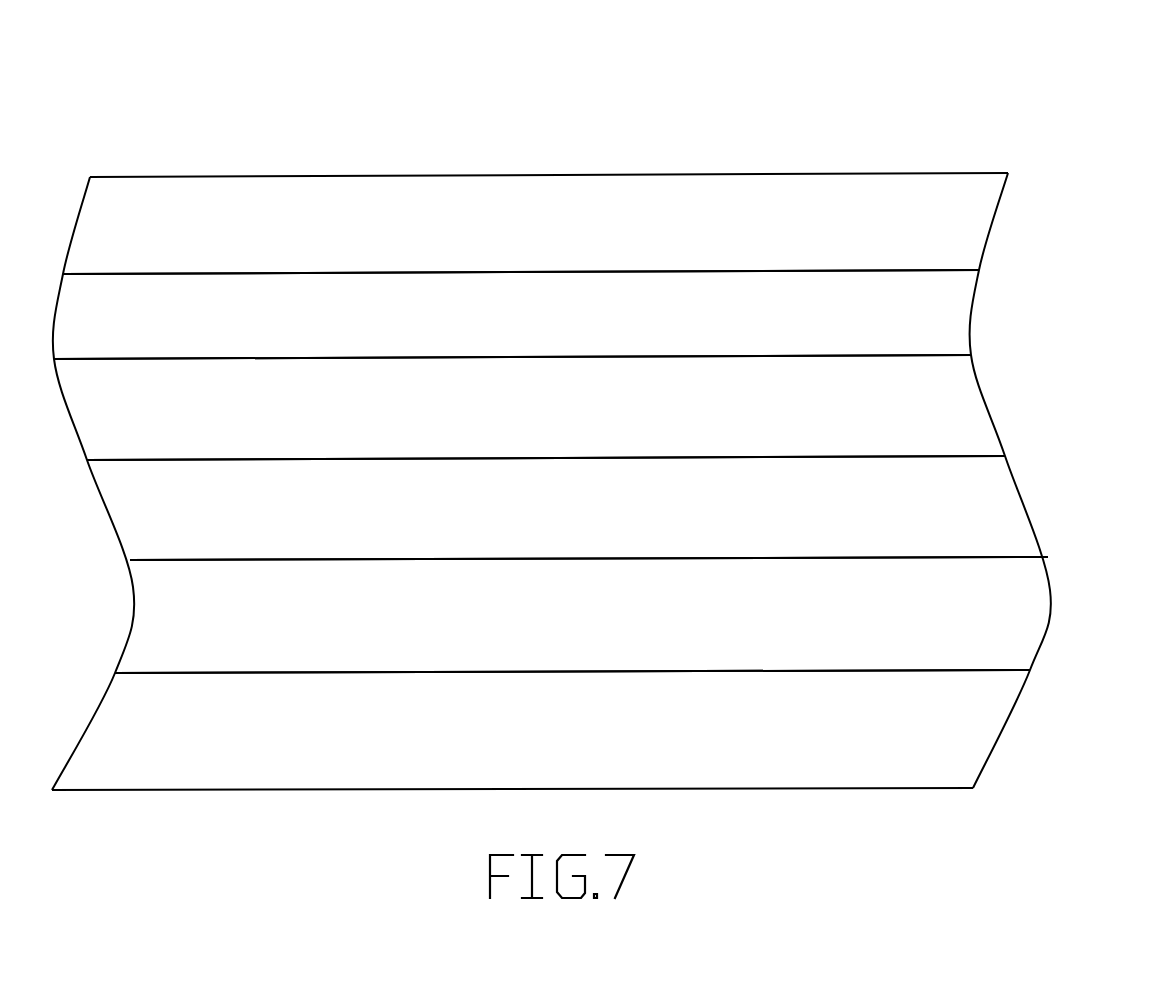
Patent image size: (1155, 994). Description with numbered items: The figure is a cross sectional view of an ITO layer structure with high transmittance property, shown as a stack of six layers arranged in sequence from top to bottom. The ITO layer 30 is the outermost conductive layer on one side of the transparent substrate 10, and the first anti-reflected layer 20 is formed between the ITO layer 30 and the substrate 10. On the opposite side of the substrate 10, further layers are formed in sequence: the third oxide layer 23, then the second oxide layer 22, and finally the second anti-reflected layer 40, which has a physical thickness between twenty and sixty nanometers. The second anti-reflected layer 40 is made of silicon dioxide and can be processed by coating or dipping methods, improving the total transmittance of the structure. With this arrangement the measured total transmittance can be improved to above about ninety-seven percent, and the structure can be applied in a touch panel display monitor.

The ITO layer 30 is at (855, 197).
The first anti-reflected layer 20 is at (942, 307).
The transparent substrate 10 is at (950, 422).
The third oxide layer 23 is at (972, 533).
The second oxide layer 22 is at (973, 622).
The second anti-reflected layer 40 is at (962, 735).